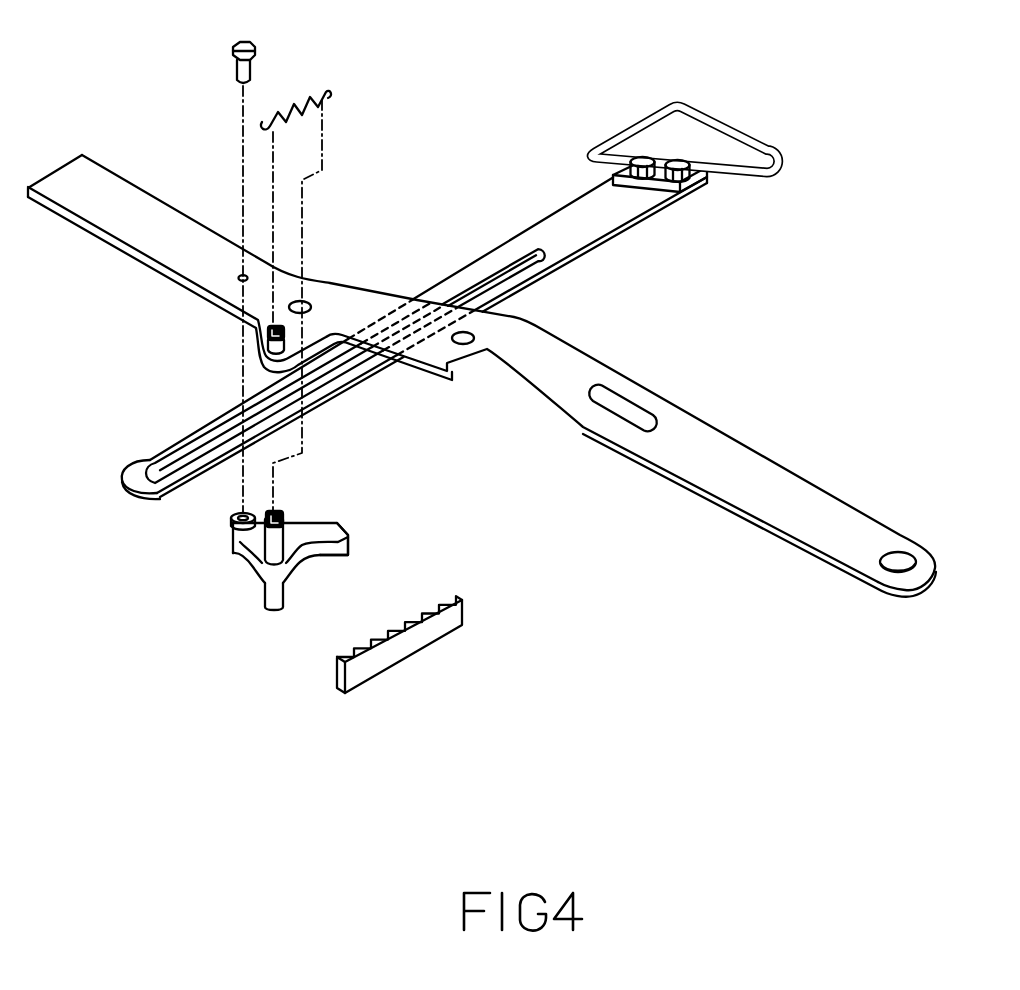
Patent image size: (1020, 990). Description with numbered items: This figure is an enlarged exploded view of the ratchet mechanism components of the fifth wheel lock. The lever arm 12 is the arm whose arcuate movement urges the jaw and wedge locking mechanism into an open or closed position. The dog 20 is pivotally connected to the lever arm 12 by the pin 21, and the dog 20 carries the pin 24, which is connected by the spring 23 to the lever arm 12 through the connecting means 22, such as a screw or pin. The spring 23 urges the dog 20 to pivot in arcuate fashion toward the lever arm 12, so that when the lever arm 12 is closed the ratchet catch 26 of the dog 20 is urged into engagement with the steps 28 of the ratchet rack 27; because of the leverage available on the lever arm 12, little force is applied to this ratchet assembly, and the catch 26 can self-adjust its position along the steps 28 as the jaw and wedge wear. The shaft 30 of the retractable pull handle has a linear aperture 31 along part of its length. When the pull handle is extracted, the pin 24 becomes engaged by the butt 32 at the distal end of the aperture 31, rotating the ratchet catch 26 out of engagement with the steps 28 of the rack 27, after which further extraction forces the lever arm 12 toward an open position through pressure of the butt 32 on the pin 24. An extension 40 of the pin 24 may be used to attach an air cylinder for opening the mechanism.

The lever arm 12 is at (800, 474).
The dog 20 is at (232, 566).
The pin 21 is at (233, 70).
The connecting means 22 is at (266, 342).
The spring 23 is at (330, 90).
The pin 24 is at (287, 514).
The ratchet catch 26 is at (349, 548).
The ratchet rack 27 is at (447, 638).
The steps 28 is at (412, 620).
The shaft 30 is at (624, 236).
The linear aperture 31 is at (476, 298).
The butt 32 is at (158, 470).
The extension 40 is at (274, 609).